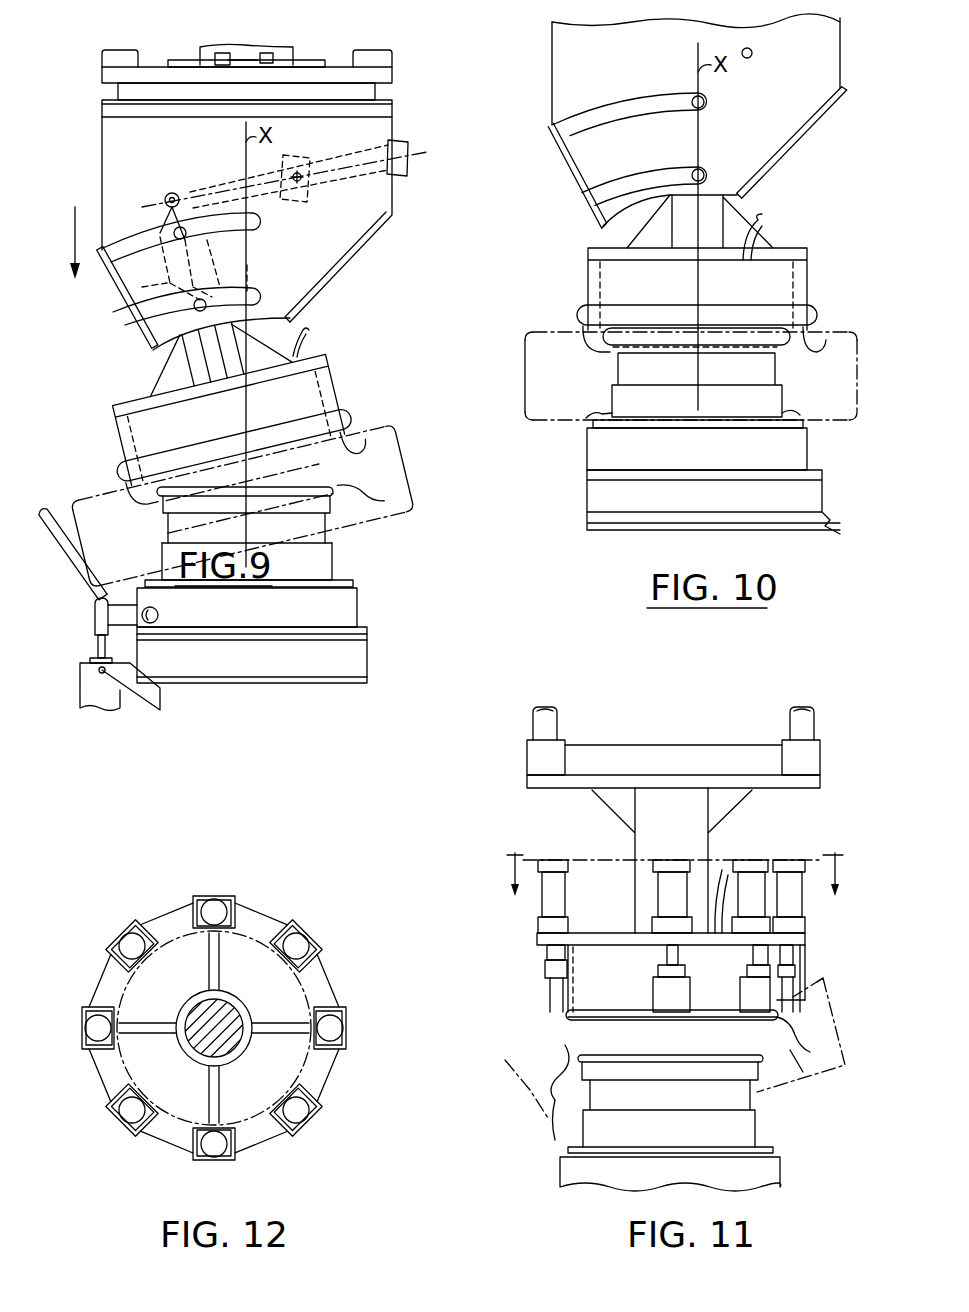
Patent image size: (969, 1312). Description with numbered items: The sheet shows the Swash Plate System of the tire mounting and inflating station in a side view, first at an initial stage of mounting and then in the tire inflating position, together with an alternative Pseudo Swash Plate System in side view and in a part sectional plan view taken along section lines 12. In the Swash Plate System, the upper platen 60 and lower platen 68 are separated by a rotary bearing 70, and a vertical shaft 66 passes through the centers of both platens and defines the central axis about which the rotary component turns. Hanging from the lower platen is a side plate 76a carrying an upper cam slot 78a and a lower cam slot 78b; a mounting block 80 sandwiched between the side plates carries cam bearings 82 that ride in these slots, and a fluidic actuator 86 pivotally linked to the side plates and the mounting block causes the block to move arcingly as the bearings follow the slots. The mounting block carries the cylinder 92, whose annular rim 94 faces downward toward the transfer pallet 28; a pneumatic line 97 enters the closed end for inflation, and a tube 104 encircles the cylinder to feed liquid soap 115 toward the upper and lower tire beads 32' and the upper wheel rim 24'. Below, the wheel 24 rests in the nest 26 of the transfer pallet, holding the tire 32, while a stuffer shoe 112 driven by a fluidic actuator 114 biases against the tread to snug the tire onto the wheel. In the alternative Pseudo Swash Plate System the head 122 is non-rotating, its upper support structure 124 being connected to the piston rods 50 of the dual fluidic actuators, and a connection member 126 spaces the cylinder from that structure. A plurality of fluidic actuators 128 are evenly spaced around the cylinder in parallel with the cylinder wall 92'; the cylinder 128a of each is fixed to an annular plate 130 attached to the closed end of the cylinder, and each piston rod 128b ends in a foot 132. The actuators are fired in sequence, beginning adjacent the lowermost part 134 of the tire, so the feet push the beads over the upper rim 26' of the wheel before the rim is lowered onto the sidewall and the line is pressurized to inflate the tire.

In FIG. 11, the section lines 12— 12 is at (676, 875).
In FIG. 9, the wheel 24 is at (283, 534).
In FIG. 10, the wheel 24 is at (707, 373).
In FIG. 9, the upper wheel rim 24' is at (287, 498).
In FIG. 9, the nest 26 is at (277, 595).
In FIG. 11, the nest 26 is at (686, 1116).
In FIG. 11, the upper rim 26' is at (670, 1054).
In FIG. 9, the transfer pallet 28 is at (358, 620).
In FIG. 10, the transfer pallet 28 is at (808, 460).
In FIG. 9, the tire 32 is at (263, 505).
In FIG. 10, the tire 32 is at (670, 376).
In FIG. 11, the tire 32 is at (816, 1035).
In FIG. 9, the upper and lower tire beads 32' is at (358, 468).
In FIG. 11, the upper and lower tire beads 32' is at (803, 1044).
In FIG. 11, the piston rods 50 is at (560, 727).
In FIG. 9, the upper platen 60 is at (388, 82).
In FIG. 9, the vertical shaft 66 is at (262, 62).
In FIG. 9, the lower platen 68 is at (392, 103).
In FIG. 9, the rotary bearing 70 is at (385, 92).
In FIG. 9, the side plate 76a is at (393, 198).
In FIG. 9, the upper cam slot 78a is at (262, 224).
In FIG. 10, the upper cam slot 78a is at (640, 88).
In FIG. 9, the lower cam slot 78b is at (260, 300).
In FIG. 10, the lower cam slot 78b is at (668, 176).
In FIG. 9, the mounting block 80 is at (127, 307).
In FIG. 10, the mounting block 80 is at (670, 173).
In FIG. 9, the cam bearings 82 is at (194, 259).
In FIG. 9, the fluidic actuator 86 is at (318, 202).
In FIG. 9, the cylinder 92 is at (244, 417).
In FIG. 10, the cylinder 92 is at (719, 289).
In FIG. 11, the cylinder 92 is at (712, 981).
In FIG. 11, the cylinder wall 92' is at (819, 957).
In FIG. 10, the annular rim 94 is at (824, 338).
In FIG. 11, the annular rim 94 is at (566, 1020).
In FIG. 9, the pneumatic line 97 is at (318, 334).
In FIG. 10, the pneumatic line 97 is at (768, 227).
In FIG. 11, the pneumatic line 97 is at (717, 899).
In FIG. 9, the tube 104 is at (348, 410).
In FIG. 9, the shoe 112 is at (73, 573).
In FIG. 9, the fluidic actuator 114 is at (83, 652).
In FIG. 9, the liquid soap 115 is at (335, 548).
In FIG. 11, the head 122 is at (518, 921).
In FIG. 11, the upper support structure 124 is at (681, 753).
In FIG. 11, the connection member 126 is at (712, 835).
In FIG. 12, the connection member 126 is at (228, 1007).
In FIG. 11, the fluidic actuators 128 is at (650, 890).
In FIG. 12, the fluidic actuators 128 is at (122, 926).
In FIG. 11, the cylinder 128a is at (563, 860).
In FIG. 11, the piston rod 128b is at (583, 957).
In FIG. 11, the annular plate 130 is at (540, 935).
In FIG. 12, the annular plate 130 is at (340, 990).
In FIG. 11, the foot 132 is at (555, 993).
In FIG. 11, the lowermost part 134 is at (548, 1050).